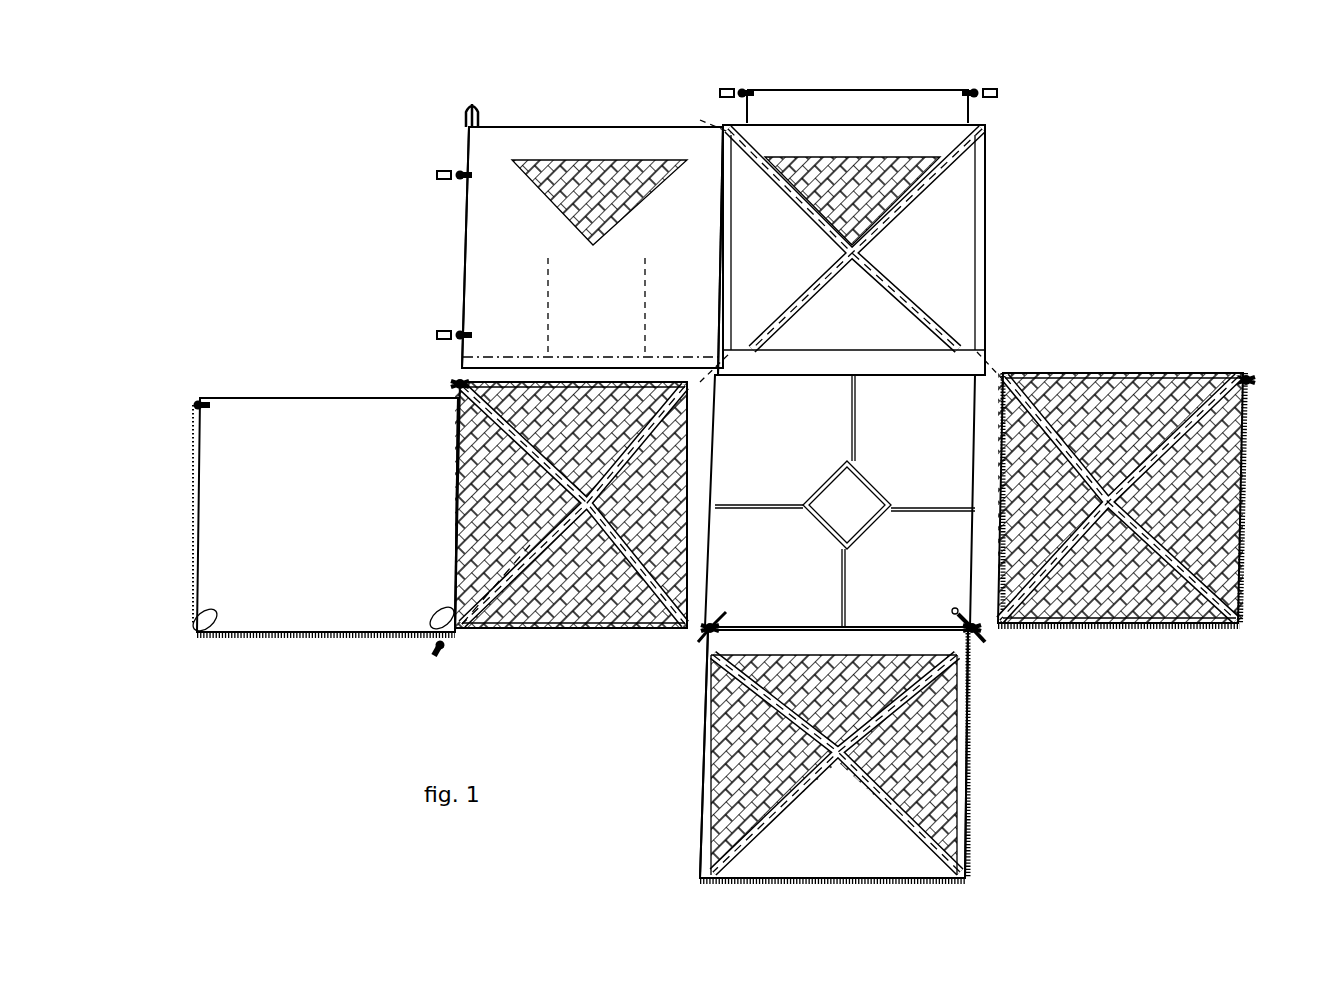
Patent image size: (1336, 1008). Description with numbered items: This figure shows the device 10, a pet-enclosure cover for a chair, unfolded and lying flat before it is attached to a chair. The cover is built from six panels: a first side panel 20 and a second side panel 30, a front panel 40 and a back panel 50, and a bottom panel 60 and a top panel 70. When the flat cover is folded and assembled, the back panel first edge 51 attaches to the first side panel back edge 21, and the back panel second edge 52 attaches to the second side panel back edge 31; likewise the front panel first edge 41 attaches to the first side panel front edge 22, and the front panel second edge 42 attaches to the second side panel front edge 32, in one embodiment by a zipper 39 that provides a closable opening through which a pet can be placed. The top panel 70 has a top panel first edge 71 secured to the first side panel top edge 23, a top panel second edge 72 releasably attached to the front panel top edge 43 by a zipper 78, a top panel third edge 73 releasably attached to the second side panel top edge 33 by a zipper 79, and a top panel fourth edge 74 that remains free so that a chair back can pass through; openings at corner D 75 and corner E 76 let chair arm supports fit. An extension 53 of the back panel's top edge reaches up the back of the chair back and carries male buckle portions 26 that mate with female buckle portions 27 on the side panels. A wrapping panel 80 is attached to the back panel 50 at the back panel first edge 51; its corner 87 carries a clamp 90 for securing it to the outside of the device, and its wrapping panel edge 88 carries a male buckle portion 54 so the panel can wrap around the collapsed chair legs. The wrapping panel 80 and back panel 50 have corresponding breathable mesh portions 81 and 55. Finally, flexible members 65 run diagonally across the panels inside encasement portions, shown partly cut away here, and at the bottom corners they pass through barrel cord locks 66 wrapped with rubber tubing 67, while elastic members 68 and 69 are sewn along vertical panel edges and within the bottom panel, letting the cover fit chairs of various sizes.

The device 10 is at (1110, 237).
The first side panel 20 is at (571, 505).
The first side panel back edge 21 is at (450, 373).
The first side panel front edge 22 is at (578, 630).
The first side panel top edge 23 is at (490, 620).
The male buckle portions 26 is at (733, 85).
The female buckle portions 27 is at (455, 387).
The second side panel 30 is at (1120, 498).
The second side panel back edge 31 is at (1165, 372).
The second side panel front edge 32 is at (1183, 630).
The second side panel top edge 33 is at (1245, 480).
The zipper 39 is at (975, 640).
The front panel 40 is at (834, 755).
The front panel first edge 41 is at (700, 780).
The front panel second edge 42 is at (968, 813).
The front panel top edge 43 is at (880, 878).
The back panel 50 is at (852, 251).
The back panel first edge 51 is at (722, 140).
The back panel second edge 52 is at (990, 140).
The extension 53 is at (857, 106).
The male buckle portion 54 is at (430, 332).
The mesh portion 55 is at (900, 185).
The bottom panel 60 is at (840, 501).
The flexible members 65 is at (707, 668).
The barrel cord lock 66 is at (980, 628).
The rubber tubing 67 is at (955, 618).
The elastic members 68 is at (1053, 688).
The elastic members 69 is at (875, 485).
The top panel 70 is at (327, 515).
The top panel first edge 71 is at (457, 557).
The top panel second edge 72 is at (312, 635).
The top panel third edge 73 is at (196, 527).
The top panel fourth edge 74 is at (250, 397).
The corner D 75 is at (447, 632).
The corner E 76 is at (205, 630).
The zipper 78 is at (435, 648).
The zipper 79 is at (193, 403).
The wrapping panel 80 is at (592, 247).
The mesh portion 81 is at (597, 185).
The corner 87 is at (469, 128).
The wrapping panel edge 88 is at (467, 146).
The clamp 90 is at (467, 108).